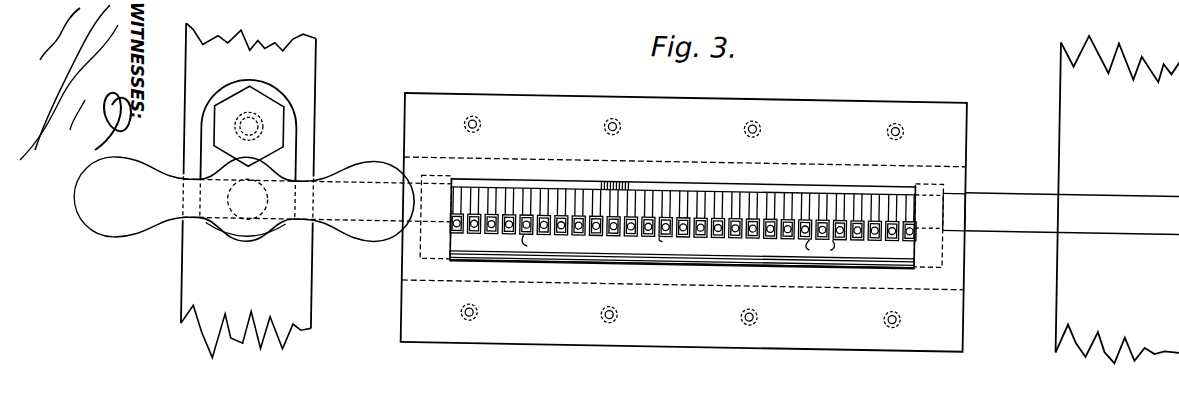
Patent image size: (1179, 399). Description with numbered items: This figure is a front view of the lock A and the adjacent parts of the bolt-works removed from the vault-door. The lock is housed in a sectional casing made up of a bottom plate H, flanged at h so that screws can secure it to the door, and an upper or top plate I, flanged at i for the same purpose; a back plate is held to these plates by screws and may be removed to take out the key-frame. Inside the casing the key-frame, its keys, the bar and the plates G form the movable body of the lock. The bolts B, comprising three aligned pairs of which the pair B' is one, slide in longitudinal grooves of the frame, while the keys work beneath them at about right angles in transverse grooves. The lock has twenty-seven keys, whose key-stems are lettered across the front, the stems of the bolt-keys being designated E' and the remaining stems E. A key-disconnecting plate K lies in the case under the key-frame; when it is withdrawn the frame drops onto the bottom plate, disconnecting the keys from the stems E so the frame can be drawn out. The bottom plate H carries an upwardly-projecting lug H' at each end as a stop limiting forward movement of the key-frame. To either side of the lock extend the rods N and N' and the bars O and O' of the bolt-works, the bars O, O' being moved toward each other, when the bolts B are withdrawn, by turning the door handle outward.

The lock A is at (683, 222).
The flange of top plate i is at (685, 143).
The flange of bottom plate h is at (682, 304).
The top plate I is at (722, 172).
The plates G is at (537, 186).
The toothed section of rail g' is at (637, 176).
The bolts B is at (684, 189).
The first pair of bolts B' is at (789, 197).
The blocks C' is at (683, 214).
The lug of bottom plate H' is at (681, 221).
The key-stem of first bolt-key E' is at (533, 242).
The key-stems E is at (820, 243).
The key-disconnecting plate K is at (567, 257).
The bottom plate H is at (682, 270).
The rod N is at (282, 200).
The rod N' is at (1072, 214).
The bar O is at (248, 182).
The bar O' is at (1117, 199).